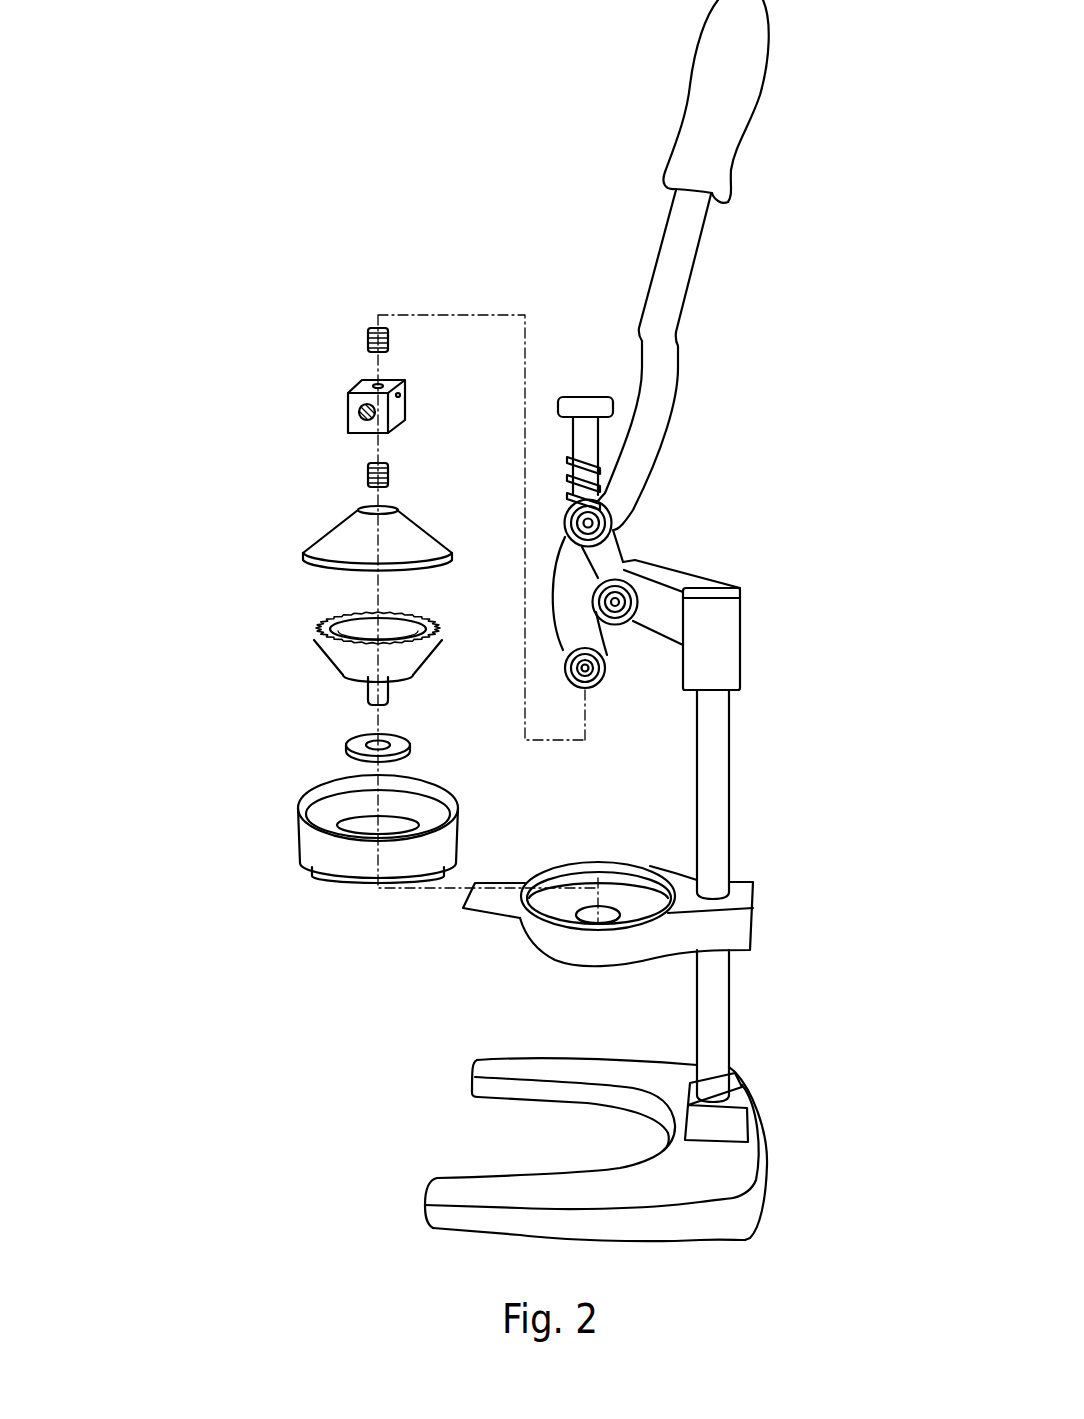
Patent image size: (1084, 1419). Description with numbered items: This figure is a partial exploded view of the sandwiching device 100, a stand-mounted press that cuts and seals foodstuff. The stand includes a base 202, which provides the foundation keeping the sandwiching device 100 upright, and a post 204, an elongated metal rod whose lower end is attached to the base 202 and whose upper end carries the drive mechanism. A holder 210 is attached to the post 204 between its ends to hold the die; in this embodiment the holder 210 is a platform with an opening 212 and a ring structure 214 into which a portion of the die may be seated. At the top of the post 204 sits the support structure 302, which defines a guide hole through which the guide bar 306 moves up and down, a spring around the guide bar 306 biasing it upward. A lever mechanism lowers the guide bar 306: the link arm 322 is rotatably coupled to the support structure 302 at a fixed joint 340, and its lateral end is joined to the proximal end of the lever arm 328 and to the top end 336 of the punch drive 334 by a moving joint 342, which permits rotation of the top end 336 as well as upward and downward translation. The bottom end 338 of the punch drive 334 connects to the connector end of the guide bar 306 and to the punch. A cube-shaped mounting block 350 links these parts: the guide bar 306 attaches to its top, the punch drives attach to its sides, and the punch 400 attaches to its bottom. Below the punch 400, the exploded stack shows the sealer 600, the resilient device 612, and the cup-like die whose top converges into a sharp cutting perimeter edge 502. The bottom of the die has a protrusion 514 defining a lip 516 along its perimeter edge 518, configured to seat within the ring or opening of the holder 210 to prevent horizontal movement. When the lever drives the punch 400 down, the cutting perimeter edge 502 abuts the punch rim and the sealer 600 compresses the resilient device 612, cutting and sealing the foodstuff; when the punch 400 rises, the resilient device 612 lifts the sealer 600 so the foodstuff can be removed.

The sandwiching device 100 is at (420, 178).
The base 202 is at (737, 1232).
The post 204 is at (722, 797).
The holder 210 is at (543, 952).
The opening 212 is at (632, 893).
The ring structure 214 is at (584, 862).
The support structure 302 is at (735, 647).
The guide bar 306 is at (577, 430).
The link arm 322 is at (607, 553).
The lever arm 328 is at (683, 257).
The punch drive 334 is at (565, 602).
The top end 336 is at (553, 518).
The bottom end 338 is at (606, 692).
The fixed joint 340 is at (632, 602).
The moving joint 342 is at (614, 525).
The mounting block 350 is at (397, 408).
The punch 400 is at (330, 538).
The cutting perimeter edge 502 is at (313, 787).
The protrusion 514 is at (327, 880).
The lip 516 is at (455, 856).
The perimeter edge 518 is at (452, 828).
The sealer 600 is at (333, 665).
The resilient device 612 is at (347, 745).